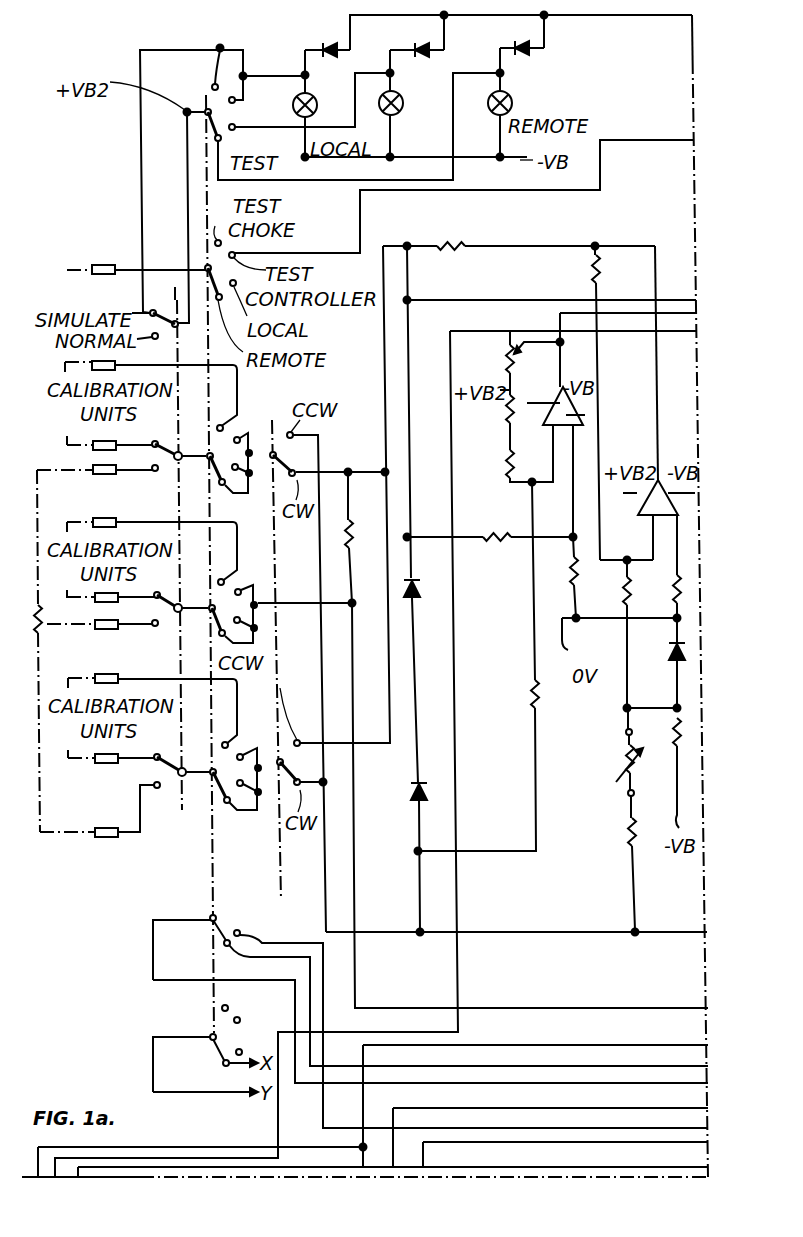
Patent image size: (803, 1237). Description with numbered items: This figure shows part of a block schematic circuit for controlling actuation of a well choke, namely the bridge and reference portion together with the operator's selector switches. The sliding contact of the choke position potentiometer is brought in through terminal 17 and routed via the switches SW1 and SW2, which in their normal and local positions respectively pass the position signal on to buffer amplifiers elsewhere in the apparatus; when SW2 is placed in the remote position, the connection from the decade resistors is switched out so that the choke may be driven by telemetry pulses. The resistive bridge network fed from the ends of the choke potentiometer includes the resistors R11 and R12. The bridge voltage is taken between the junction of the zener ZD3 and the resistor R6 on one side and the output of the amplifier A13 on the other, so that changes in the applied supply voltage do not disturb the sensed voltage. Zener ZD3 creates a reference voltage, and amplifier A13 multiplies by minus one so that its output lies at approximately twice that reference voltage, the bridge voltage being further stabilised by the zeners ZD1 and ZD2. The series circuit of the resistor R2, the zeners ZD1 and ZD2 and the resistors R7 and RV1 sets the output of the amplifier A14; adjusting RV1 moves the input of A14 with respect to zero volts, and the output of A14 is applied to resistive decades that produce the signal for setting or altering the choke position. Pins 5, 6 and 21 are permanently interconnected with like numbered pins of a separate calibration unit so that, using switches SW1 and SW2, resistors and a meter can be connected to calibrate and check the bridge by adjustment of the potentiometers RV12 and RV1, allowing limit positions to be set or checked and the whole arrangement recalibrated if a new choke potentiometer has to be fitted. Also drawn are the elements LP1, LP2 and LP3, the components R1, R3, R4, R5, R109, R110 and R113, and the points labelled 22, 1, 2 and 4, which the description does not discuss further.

The switch SW1 is at (175, 287).
The switch SW2 is at (217, 74).
The simulate resistor 22 is at (92, 266).
The calibration unit resistor 1 is at (108, 475).
The calibration unit resistor 2 is at (95, 828).
The calibration unit resistor 4 is at (152, 697).
The pin 5 is at (90, 447).
The pin 6 is at (105, 765).
The terminal 17 is at (100, 630).
The pin 21 is at (97, 602).
The test lamp LP1 is at (299, 102).
The local lamp LP2 is at (411, 102).
The remote lamp LP3 is at (516, 101).
The resistor R1 is at (356, 545).
The resistor R2 is at (449, 240).
The resistor R3 is at (592, 263).
The resistor R4 is at (618, 596).
The resistor R5 is at (672, 593).
The resistor R6 is at (672, 722).
The resistor R7 is at (622, 832).
The resistor R11 is at (509, 543).
The resistor R12 is at (570, 568).
The resistor R109 is at (506, 412).
The resistor R110 is at (506, 468).
The resistor R113 is at (527, 697).
The potentiometer RV1 is at (620, 752).
The potentiometer RV12 is at (516, 340).
The zener diode ZD1 is at (423, 590).
The zener diode ZD2 is at (412, 792).
The zener diode ZD3 is at (672, 648).
The amplifier A13 is at (648, 510).
The amplifier A14 is at (590, 412).